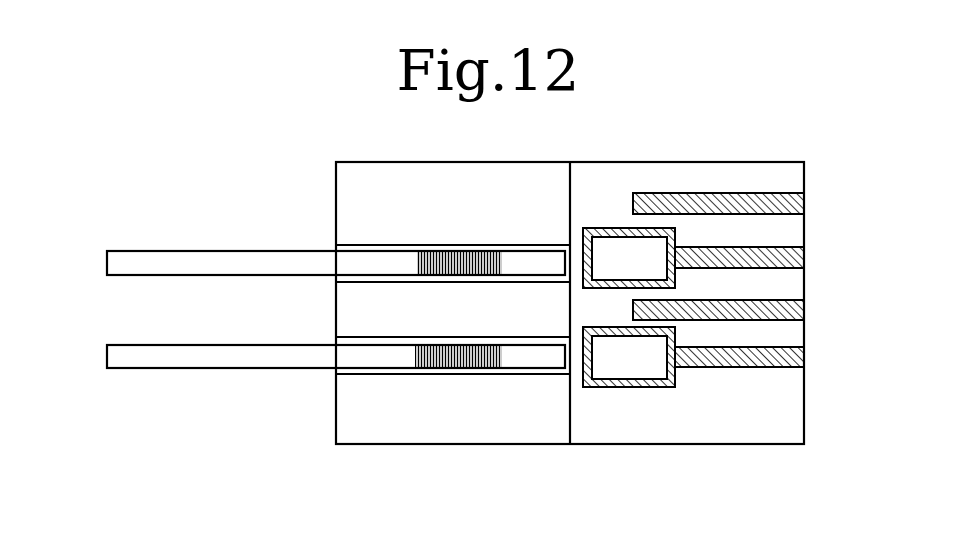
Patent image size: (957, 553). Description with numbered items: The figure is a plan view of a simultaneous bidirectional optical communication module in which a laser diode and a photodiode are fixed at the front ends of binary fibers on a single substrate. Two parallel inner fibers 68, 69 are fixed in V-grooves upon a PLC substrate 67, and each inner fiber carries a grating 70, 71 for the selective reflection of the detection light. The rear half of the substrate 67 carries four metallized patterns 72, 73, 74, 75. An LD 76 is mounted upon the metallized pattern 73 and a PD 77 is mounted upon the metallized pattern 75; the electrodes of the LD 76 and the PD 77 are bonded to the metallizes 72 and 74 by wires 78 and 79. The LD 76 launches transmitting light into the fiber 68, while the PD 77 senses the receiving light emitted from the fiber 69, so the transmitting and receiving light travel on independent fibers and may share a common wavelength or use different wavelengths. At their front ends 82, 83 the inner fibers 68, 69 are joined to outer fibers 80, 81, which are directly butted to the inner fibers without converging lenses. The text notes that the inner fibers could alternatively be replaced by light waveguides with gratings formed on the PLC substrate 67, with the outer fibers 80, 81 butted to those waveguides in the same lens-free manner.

The PLC substrate 67 is at (502, 187).
The fiber 68 is at (388, 262).
The fiber 69 is at (382, 355).
The grating 70 is at (493, 250).
The grating 71 is at (478, 352).
The metallized pattern 72 is at (803, 206).
The metallized pattern 73 is at (803, 262).
The metallized pattern 74 is at (803, 313).
The metallized pattern 75 is at (803, 365).
The LD 76 is at (652, 250).
The PD 77 is at (634, 366).
The wire 78 is at (632, 243).
The wire 79 is at (624, 338).
The outer fiber 80 is at (170, 258).
The outer fiber 81 is at (142, 358).
The front end 82 is at (330, 251).
The front end 83 is at (330, 344).